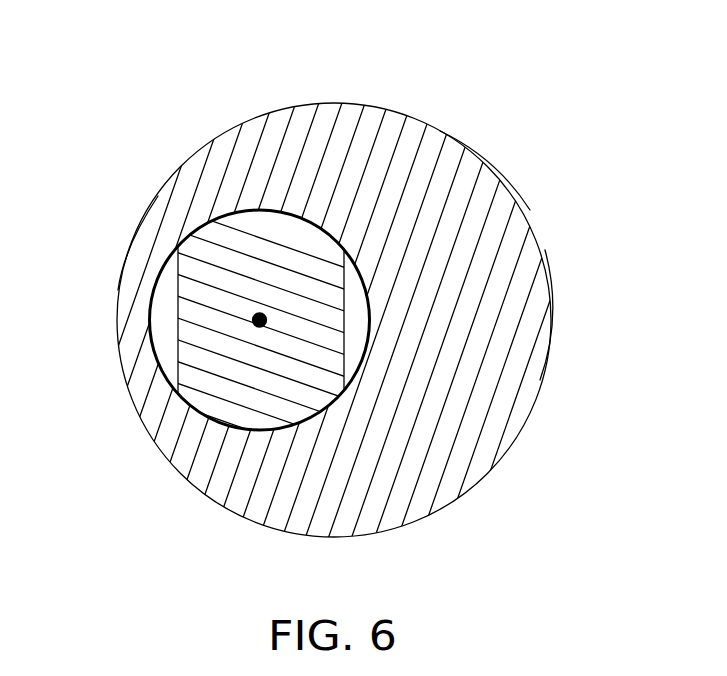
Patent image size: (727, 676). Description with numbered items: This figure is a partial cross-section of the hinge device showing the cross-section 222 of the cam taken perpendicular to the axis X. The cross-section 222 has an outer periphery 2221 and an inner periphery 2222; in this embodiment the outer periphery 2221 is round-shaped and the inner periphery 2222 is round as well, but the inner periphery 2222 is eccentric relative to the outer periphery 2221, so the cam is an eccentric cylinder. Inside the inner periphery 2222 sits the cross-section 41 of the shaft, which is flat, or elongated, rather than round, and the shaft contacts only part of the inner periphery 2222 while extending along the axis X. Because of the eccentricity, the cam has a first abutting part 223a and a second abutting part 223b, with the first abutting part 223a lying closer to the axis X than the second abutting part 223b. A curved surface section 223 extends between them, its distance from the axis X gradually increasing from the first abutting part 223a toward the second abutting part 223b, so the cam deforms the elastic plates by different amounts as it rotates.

The curved surface section 223 is at (355, 103).
The first abutting part 223a is at (279, 99).
The second abutting part 223b is at (487, 146).
The cross-section 222 is at (480, 195).
The outer periphery 2221 is at (541, 258).
The inner periphery 2222 is at (370, 325).
The cross-section 41 is at (192, 292).
The axis X is at (255, 322).